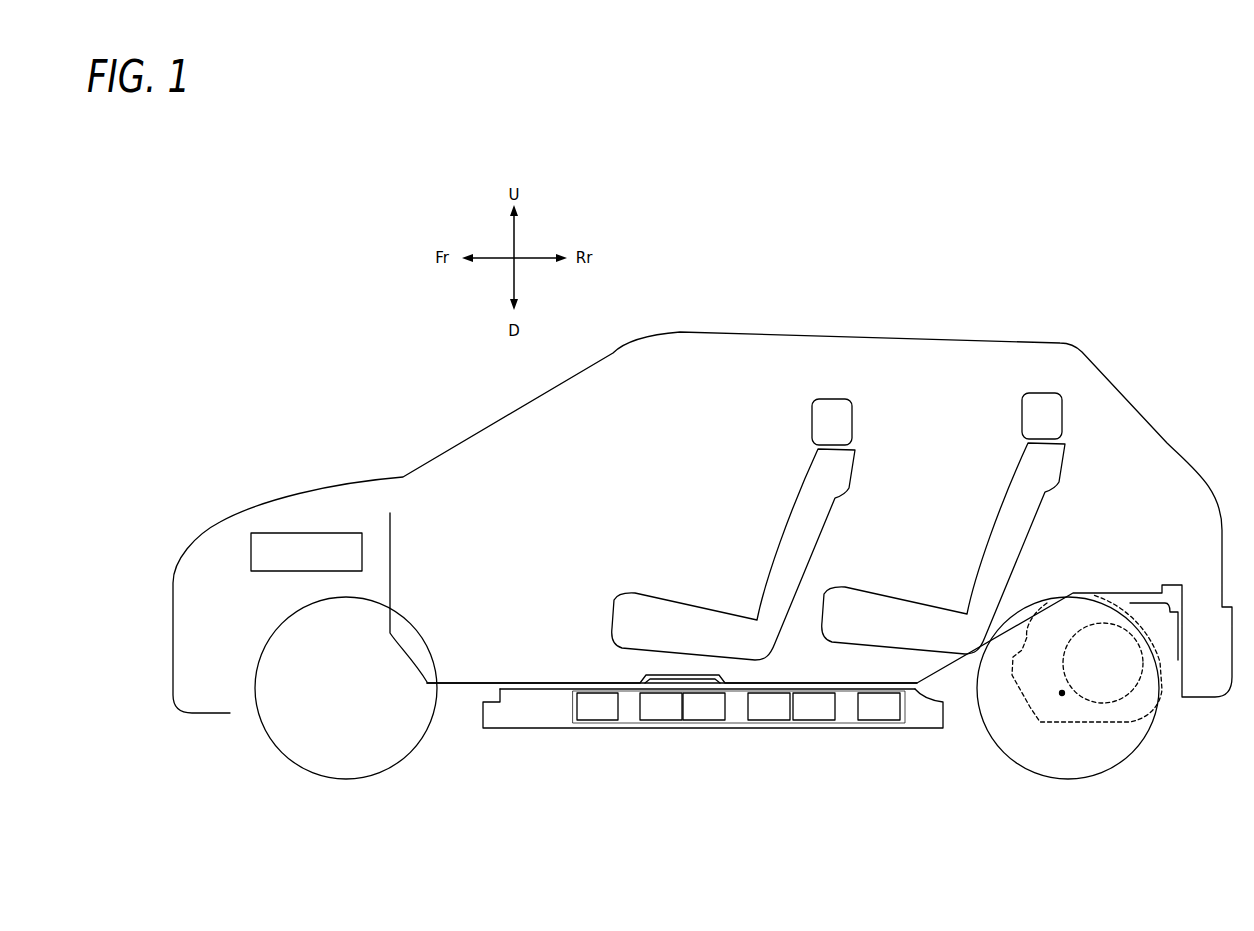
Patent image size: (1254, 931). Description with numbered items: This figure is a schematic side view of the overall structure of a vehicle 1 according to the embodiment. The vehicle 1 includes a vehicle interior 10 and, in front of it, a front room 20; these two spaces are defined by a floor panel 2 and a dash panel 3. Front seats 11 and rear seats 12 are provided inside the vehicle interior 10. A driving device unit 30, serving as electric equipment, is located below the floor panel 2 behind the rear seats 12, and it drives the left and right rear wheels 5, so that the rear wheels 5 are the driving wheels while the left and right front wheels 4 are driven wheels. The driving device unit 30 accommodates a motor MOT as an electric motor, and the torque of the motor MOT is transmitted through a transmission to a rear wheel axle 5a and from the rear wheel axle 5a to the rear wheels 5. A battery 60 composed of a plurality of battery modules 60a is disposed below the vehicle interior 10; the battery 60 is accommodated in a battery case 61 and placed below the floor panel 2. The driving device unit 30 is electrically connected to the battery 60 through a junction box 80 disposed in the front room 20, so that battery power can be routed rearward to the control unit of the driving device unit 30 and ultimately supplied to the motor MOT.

The vehicle 1 is at (392, 338).
The floor panel 2 is at (485, 680).
The dash panel 3 is at (393, 547).
The front wheels 4 is at (420, 743).
The rear wheels 5 is at (1143, 742).
The rear wheel axle 5a is at (1062, 695).
The vehicle interior 10 is at (704, 434).
The front seats 11 is at (797, 518).
The rear seats 12 is at (1005, 508).
The front room 20 is at (351, 519).
The driving device unit 30 is at (1163, 676).
The battery 60 is at (573, 710).
The battery modules 60a is at (810, 710).
The battery case 61 is at (843, 730).
The junction box 80 is at (278, 545).
The motor MOT is at (1108, 710).